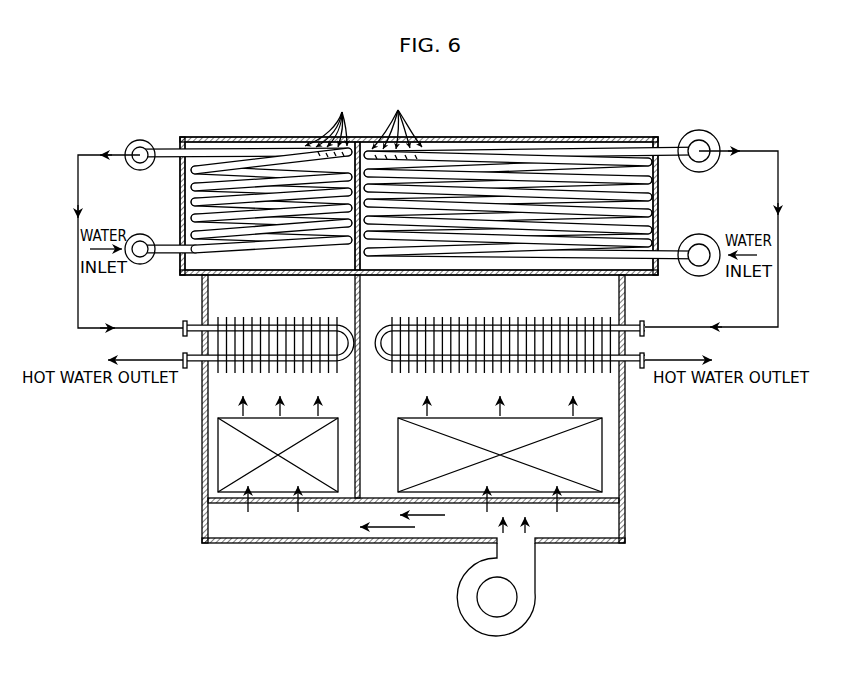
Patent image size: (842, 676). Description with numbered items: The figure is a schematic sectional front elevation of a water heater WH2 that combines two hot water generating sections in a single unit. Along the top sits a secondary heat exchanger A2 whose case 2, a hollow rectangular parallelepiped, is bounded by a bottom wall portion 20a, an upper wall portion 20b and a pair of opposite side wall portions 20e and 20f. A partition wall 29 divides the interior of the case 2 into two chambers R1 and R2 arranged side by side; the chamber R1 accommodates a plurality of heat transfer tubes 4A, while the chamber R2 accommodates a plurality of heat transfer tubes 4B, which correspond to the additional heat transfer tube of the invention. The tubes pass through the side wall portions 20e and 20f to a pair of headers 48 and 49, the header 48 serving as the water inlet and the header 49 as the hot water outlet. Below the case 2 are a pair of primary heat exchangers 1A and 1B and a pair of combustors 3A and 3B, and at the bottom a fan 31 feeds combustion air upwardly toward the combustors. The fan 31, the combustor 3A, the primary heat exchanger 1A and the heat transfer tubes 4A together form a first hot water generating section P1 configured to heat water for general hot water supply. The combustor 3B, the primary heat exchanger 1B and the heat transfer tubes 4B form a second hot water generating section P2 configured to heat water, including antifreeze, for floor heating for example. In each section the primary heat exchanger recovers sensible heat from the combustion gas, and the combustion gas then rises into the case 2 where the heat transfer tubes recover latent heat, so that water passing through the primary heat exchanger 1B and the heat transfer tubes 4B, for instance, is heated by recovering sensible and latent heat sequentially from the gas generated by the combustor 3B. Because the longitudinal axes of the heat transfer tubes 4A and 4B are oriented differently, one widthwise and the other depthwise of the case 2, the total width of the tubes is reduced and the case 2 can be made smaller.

The case 2 is at (638, 135).
The heat transfer tubes 4A is at (397, 124).
The heat transfer tubes 4B is at (327, 124).
The bottom wall portion 20a is at (505, 272).
The upper wall portion 20b is at (460, 138).
The side wall portion 20e is at (180, 188).
The side wall portion 20f is at (660, 186).
The partition wall 29 is at (365, 262).
The fan 31 is at (525, 604).
The header 48 is at (135, 237).
The header 49 is at (133, 143).
The primary heat exchanger 1A is at (595, 309).
The primary heat exchanger 1B is at (233, 310).
The combustor 3A is at (597, 463).
The combustor 3B is at (222, 452).
The secondary heat exchanger A2 is at (581, 135).
The first hot water generating section P1 is at (612, 126).
The second hot water generating section P2 is at (250, 127).
The chamber R1 is at (517, 138).
The chamber R2 is at (273, 143).
The water heater WH2 is at (689, 105).